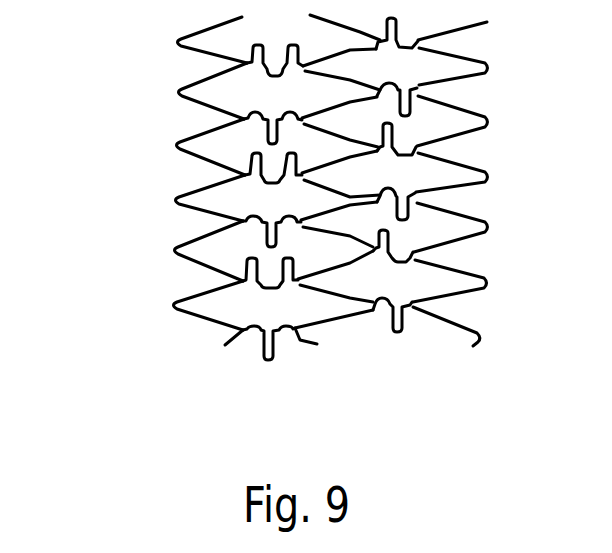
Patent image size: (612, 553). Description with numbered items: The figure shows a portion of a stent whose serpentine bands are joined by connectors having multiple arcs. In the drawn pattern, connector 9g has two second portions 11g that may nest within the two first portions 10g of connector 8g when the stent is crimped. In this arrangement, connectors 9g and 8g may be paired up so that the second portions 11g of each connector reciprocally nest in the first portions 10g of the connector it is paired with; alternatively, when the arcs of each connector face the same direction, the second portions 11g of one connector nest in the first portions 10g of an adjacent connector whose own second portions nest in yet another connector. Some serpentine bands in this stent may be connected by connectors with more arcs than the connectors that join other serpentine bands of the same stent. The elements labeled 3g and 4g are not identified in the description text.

The first ring strut 3g is at (205, 350).
The second ring strut 4g is at (340, 343).
The connector 8g is at (267, 94).
The connector 9g is at (257, 188).
The second portion 11g is at (268, 238).
The first portion 10g is at (258, 284).